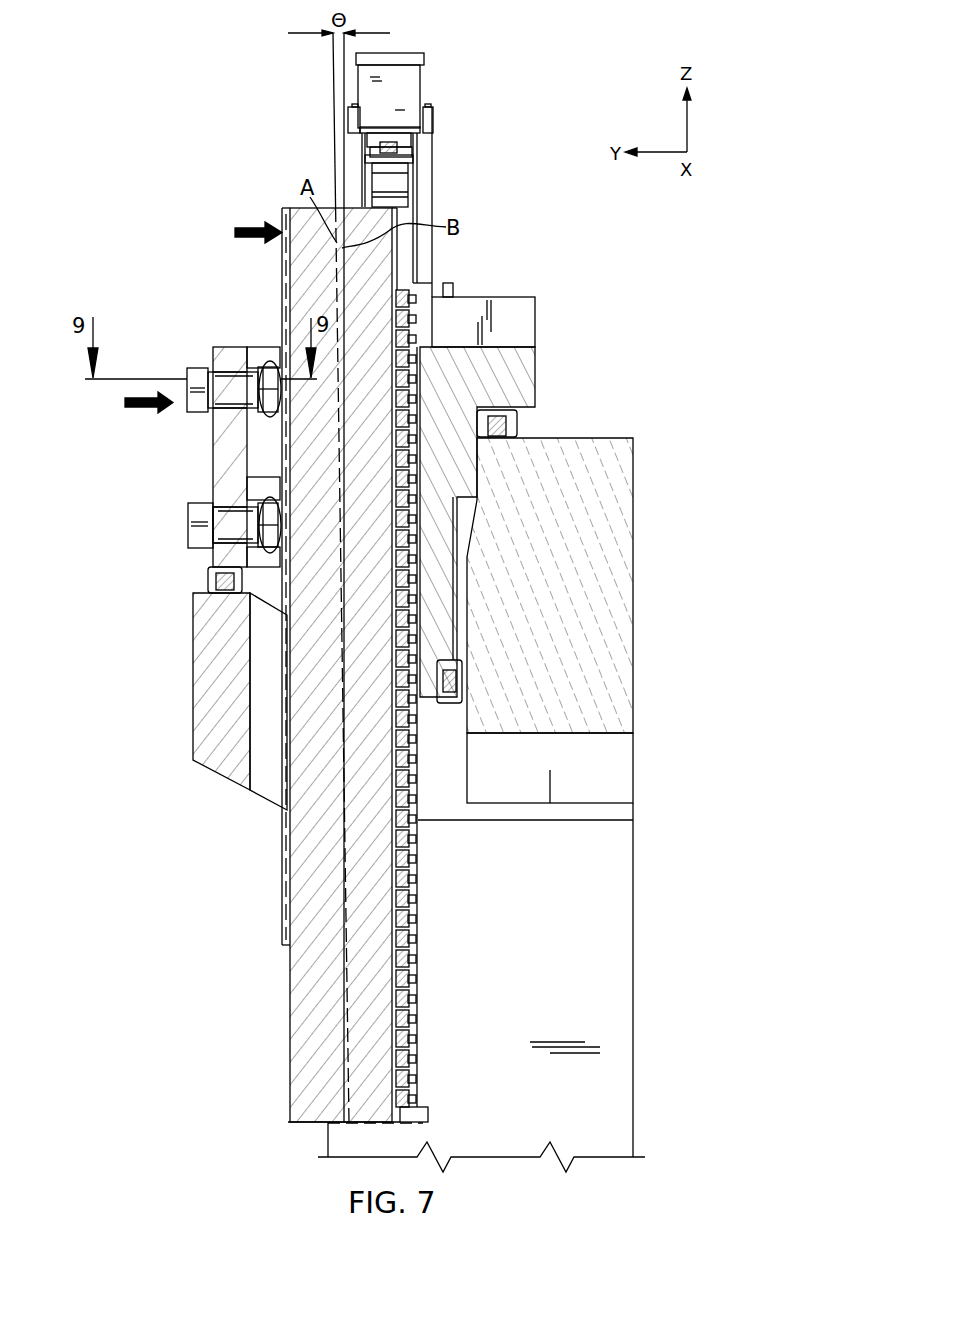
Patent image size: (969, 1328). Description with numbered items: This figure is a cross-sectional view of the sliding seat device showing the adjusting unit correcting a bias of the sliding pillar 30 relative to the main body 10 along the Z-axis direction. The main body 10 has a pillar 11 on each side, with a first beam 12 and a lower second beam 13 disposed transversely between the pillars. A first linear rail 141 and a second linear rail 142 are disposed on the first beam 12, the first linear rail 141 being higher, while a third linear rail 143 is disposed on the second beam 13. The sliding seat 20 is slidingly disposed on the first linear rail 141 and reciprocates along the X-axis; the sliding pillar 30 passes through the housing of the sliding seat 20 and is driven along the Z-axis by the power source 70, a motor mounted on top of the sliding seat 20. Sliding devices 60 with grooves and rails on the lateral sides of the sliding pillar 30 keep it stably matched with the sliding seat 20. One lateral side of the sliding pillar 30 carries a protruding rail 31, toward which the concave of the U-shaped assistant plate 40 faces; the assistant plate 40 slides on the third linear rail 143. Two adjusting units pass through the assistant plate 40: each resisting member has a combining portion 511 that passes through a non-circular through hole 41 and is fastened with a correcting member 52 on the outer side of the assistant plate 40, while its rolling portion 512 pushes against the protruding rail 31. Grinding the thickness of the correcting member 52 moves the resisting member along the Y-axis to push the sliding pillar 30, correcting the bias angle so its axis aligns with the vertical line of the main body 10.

The main body 10 is at (510, 759).
The pillar 11 is at (600, 943).
The first beam 12 is at (607, 553).
The second beam 13 is at (203, 722).
The sliding seat 20 is at (552, 314).
The sliding pillar 30 is at (268, 198).
The protruding rail 31 is at (282, 262).
The assistant plate 40 is at (215, 557).
The through hole 41 is at (230, 403).
The correcting member 52 is at (193, 370).
The sliding device 60 is at (423, 280).
The power source 70 is at (452, 84).
The first linear rail 141 is at (510, 420).
The second linear rail 142 is at (457, 683).
The third linear rail 143 is at (208, 587).
The combining portion 511 is at (210, 397).
The rolling portion 512 is at (272, 414).